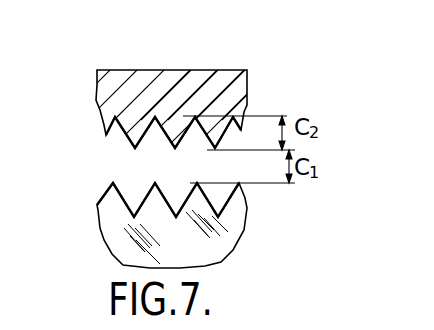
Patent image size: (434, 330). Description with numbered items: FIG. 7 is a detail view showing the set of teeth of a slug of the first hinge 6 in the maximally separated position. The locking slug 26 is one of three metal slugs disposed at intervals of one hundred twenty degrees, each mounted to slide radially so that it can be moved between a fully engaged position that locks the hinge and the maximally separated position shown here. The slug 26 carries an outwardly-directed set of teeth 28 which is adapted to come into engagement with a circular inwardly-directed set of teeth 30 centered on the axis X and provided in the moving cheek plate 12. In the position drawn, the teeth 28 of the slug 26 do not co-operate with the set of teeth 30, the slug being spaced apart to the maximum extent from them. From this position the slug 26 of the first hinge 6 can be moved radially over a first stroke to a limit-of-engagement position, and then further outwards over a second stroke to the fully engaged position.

The first hinge 6 is at (92, 68).
The moving cheek plate 12 is at (135, 97).
The set of teeth 30 is at (130, 142).
The locking slug 26 is at (183, 237).
The set of teeth 28 is at (103, 197).